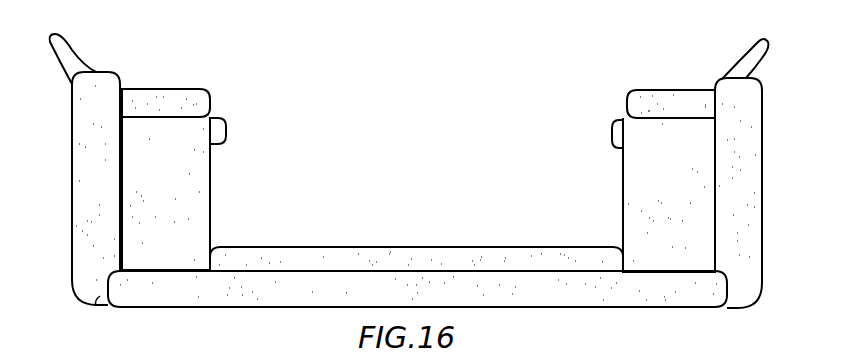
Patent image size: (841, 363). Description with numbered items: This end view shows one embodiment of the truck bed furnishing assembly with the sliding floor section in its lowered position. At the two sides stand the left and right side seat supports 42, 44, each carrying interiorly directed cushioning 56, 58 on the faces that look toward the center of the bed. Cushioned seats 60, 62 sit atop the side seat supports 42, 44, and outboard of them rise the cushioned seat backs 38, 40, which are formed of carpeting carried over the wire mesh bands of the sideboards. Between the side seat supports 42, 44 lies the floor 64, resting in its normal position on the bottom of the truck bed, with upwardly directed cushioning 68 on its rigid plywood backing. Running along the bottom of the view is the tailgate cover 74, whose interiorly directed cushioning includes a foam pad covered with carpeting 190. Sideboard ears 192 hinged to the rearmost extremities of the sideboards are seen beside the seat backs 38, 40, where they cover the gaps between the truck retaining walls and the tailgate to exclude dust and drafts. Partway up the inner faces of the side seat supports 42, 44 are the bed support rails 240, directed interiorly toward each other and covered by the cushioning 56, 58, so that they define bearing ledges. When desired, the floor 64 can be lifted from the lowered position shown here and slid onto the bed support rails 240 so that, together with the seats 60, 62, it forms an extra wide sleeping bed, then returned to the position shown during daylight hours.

The cushioned seat back 38 is at (78, 60).
The cushioned seat back 40 is at (746, 46).
The left side seat support 42 is at (211, 229).
The right side seat support 44 is at (622, 213).
The interiorly directed cushioning 56 is at (212, 201).
The interiorly directed cushioning 58 is at (621, 183).
The cushioned seat 60 is at (176, 89).
The cushioned seat 62 is at (674, 90).
The floor 64 is at (496, 246).
The upwardly directed cushioning 68 is at (380, 245).
The tailgate cover 74 is at (303, 308).
The carpeting 190 is at (96, 306).
The sideboard ear 192 is at (121, 235).
The bed support rail 240 is at (227, 130).